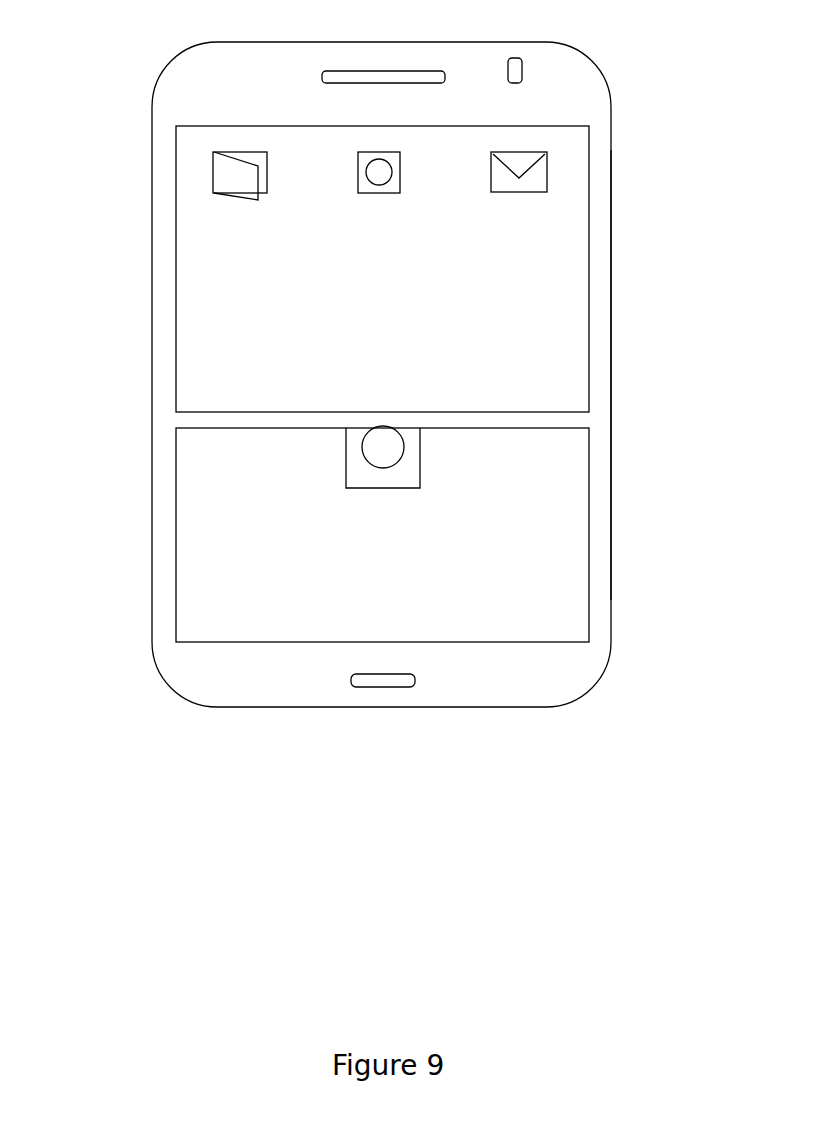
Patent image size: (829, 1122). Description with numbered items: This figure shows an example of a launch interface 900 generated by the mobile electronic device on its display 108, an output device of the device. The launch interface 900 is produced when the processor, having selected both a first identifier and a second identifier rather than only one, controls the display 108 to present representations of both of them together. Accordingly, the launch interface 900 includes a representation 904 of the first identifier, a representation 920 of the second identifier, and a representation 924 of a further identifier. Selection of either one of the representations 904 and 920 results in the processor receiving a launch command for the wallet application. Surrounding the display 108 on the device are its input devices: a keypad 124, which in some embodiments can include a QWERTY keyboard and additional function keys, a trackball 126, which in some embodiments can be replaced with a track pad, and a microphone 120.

The launch interface 900 is at (156, 261).
The representation of first identifier 904 is at (205, 168).
The representation of second identifier 920 is at (348, 156).
The representation of identifier 924 is at (555, 172).
The display 108 is at (585, 268).
The keypad 124 is at (589, 535).
The trackball 126 is at (350, 462).
The microphone 120 is at (415, 680).